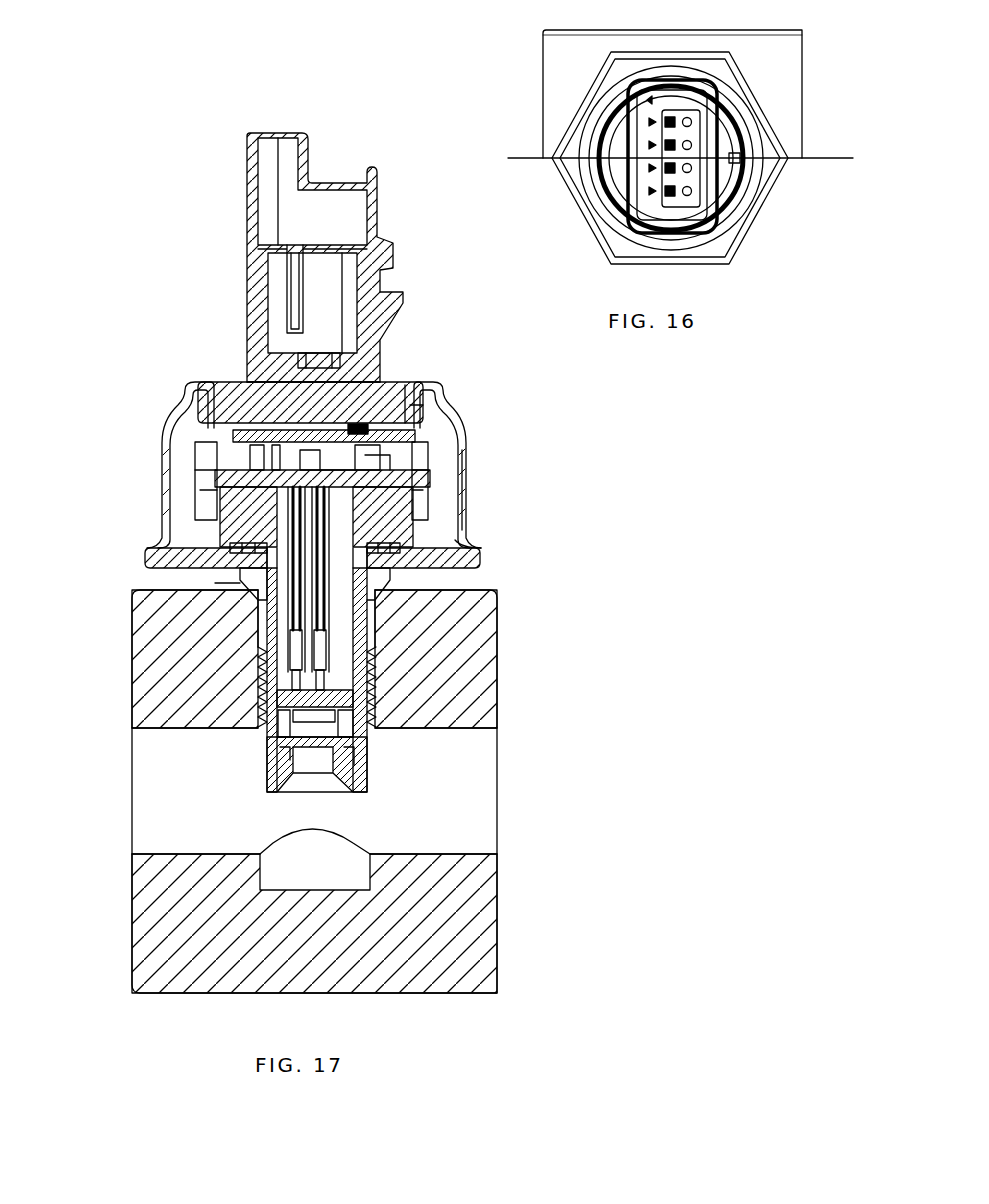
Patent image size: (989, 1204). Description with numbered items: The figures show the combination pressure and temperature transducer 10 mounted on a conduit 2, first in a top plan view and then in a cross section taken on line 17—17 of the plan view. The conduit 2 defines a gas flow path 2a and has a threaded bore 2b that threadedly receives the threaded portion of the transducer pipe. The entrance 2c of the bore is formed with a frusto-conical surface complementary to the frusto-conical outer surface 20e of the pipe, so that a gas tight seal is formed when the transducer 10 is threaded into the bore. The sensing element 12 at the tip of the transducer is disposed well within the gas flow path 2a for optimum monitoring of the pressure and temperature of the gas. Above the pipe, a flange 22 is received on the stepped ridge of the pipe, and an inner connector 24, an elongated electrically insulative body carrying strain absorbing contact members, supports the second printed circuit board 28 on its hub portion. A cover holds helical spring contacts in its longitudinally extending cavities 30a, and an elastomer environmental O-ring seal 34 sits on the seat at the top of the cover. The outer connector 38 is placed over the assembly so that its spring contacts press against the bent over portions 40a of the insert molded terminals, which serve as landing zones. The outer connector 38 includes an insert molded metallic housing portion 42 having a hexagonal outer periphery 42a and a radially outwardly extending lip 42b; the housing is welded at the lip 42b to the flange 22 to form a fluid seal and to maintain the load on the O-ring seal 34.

In FIG. 17, the combination pressure and temperature transducer 10 is at (170, 197).
In FIG. 17, the outer connector 38 is at (367, 292).
In FIG. 17, the bent over portions 40a is at (383, 410).
In FIG. 17, the longitudinally extending cavities 30a is at (420, 376).
In FIG. 17, the elastomer environmental O-ring seal 34 is at (425, 417).
In FIG. 17, the second printed circuit board 28 is at (440, 437).
In FIG. 17, the metallic housing portion 42 is at (468, 478).
In FIG. 17, the polygonal outer periphery 42a is at (463, 500).
In FIG. 17, the radially outwardly extending lip 42b is at (477, 540).
In FIG. 17, the flange 22 is at (490, 560).
In FIG. 17, the inner connector 24 is at (383, 583).
In FIG. 17, the frusto-conical outer surface 20e is at (378, 607).
In FIG. 17, the conduit 2 is at (473, 663).
In FIG. 17, the gas flow path 2a is at (182, 790).
In FIG. 17, the threaded bore 2b is at (377, 698).
In FIG. 17, the entrance of bore 2c is at (253, 590).
In FIG. 17, the sensing element 12 is at (347, 793).
In FIG. 16, the section line 17— 17 is at (522, 158).